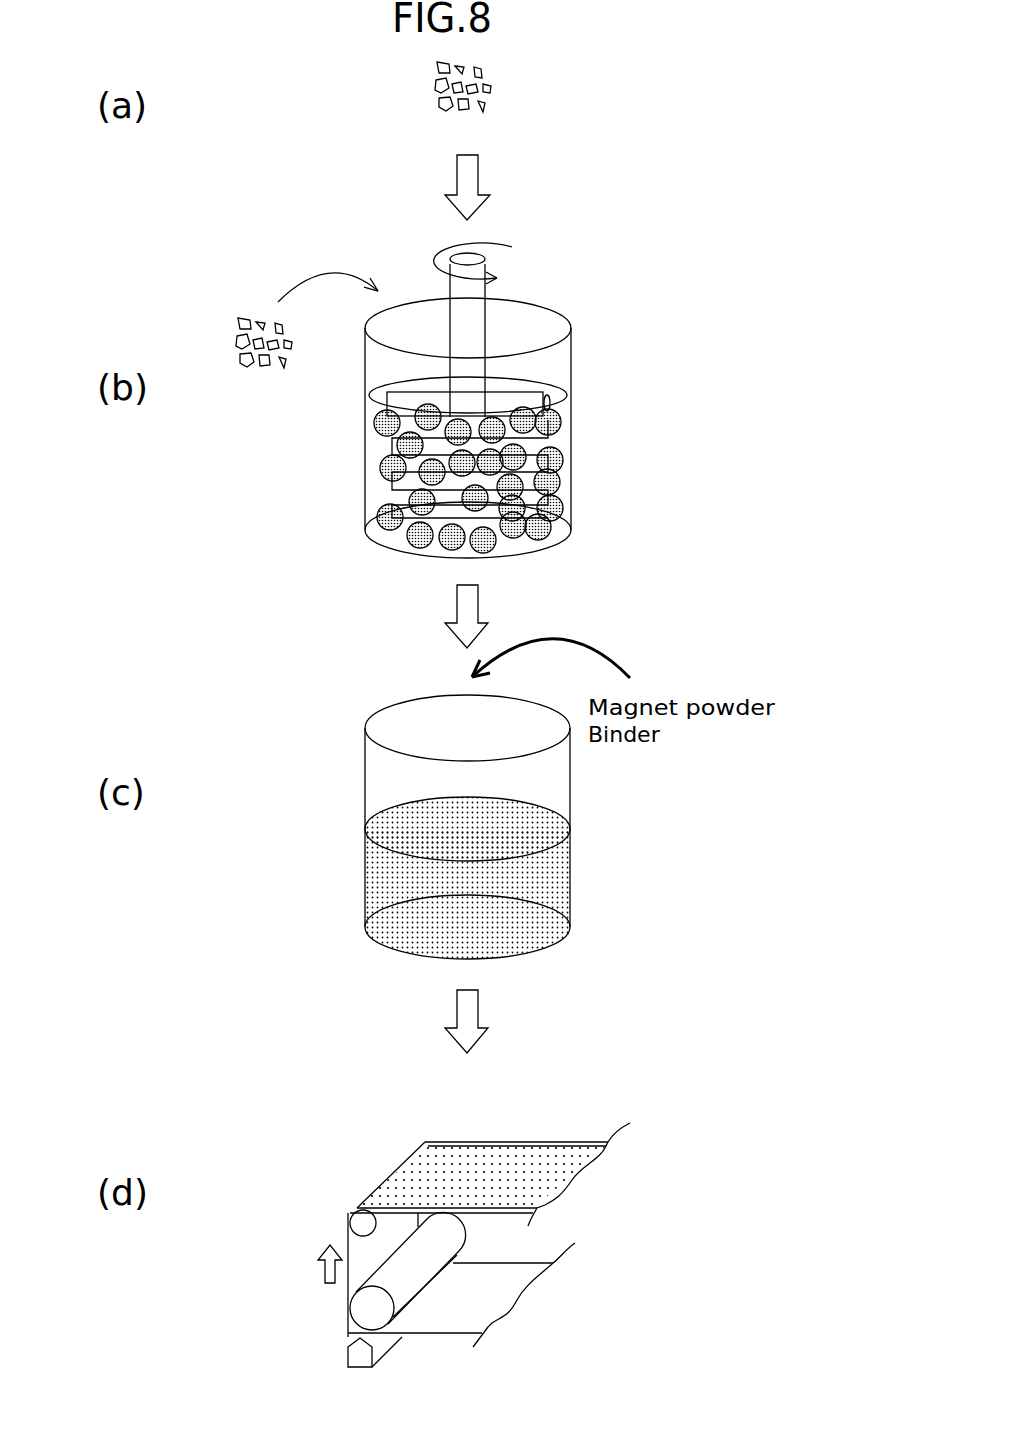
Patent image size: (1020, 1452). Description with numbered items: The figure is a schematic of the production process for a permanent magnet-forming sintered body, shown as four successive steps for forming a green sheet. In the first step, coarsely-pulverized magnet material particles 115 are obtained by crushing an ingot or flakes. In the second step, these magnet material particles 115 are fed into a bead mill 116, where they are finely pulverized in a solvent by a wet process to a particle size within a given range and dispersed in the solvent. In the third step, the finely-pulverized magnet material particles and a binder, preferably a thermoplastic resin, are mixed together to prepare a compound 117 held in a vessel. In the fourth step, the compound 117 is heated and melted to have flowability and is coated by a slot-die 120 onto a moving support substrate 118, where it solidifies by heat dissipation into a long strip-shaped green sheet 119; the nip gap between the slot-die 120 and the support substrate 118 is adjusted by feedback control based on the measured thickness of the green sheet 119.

The magnet material particles 115 is at (437, 100).
The bead mill 116 is at (553, 475).
The compound 117 is at (560, 893).
The support substrate 118 is at (443, 1142).
The green sheet 119 is at (498, 1165).
The slot-die 120 is at (367, 1353).